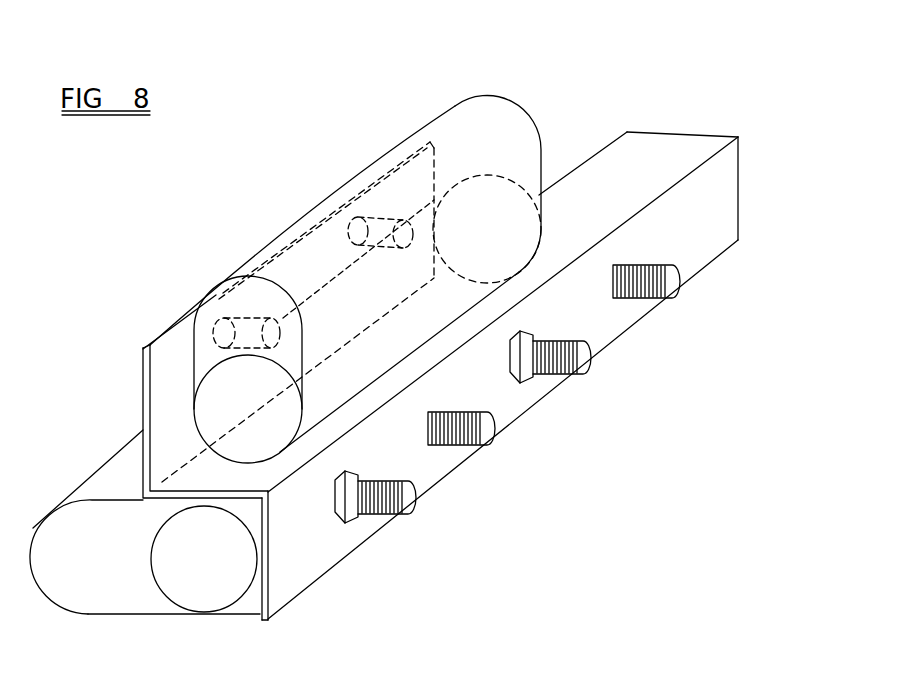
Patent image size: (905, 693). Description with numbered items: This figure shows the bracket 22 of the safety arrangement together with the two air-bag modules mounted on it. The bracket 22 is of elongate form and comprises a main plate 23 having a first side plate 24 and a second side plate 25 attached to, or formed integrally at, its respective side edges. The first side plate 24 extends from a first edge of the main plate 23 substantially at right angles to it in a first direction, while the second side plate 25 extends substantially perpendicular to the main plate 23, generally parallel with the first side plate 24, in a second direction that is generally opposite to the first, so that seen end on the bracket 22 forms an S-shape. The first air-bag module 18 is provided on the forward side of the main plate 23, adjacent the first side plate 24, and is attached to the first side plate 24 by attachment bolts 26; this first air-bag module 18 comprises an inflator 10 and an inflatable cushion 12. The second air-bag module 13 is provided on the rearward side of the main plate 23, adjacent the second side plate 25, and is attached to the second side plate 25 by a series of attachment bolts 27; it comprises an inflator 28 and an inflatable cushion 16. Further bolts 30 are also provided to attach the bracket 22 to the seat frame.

The inflator 10 is at (208, 394).
The inflatable cushion 12 is at (484, 133).
The second air-bag module 13 is at (138, 638).
The inflatable cushion 16 is at (97, 581).
The first air-bag module 18 is at (289, 178).
The bracket 22 is at (663, 140).
The main plate 23 is at (613, 189).
The first side plate 24 is at (142, 405).
The second side plate 25 is at (303, 592).
The attachment bolts 26 is at (357, 194).
The attachment bolts 27 is at (615, 364).
The inflator 28 is at (204, 559).
The bolts 30 is at (691, 286).